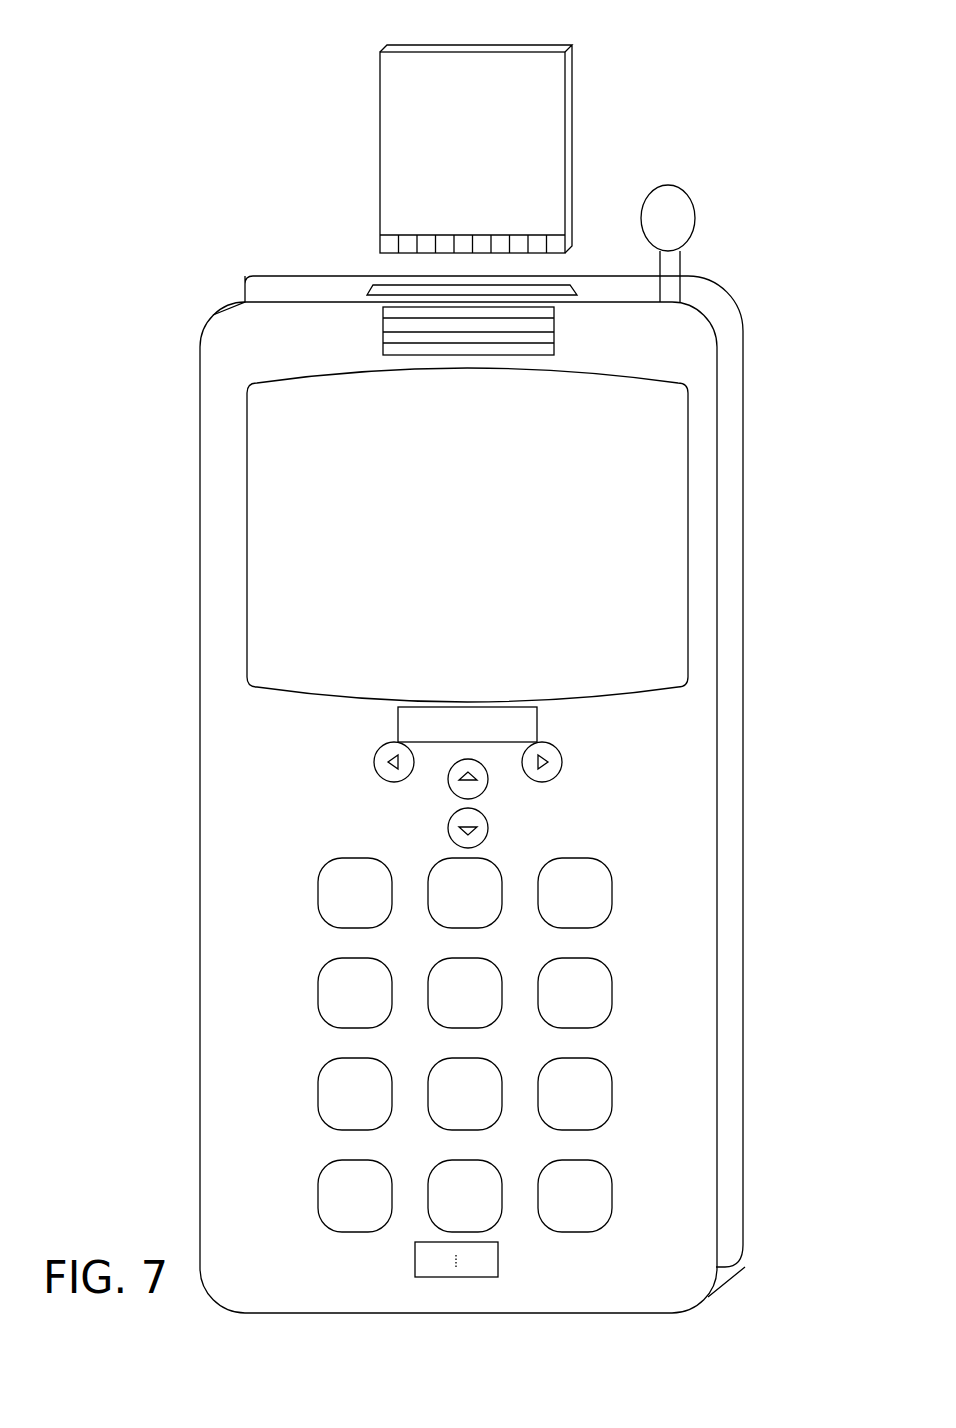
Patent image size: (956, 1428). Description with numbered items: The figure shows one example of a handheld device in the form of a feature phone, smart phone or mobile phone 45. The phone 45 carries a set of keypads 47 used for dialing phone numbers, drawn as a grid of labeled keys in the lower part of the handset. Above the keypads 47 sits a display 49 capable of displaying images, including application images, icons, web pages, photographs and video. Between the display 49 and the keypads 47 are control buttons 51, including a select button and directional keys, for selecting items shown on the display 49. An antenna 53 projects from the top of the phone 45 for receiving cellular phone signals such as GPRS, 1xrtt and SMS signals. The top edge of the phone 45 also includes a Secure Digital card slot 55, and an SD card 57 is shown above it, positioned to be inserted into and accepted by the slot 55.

The mobile phone 45 is at (199, 340).
The keypads 47 is at (633, 892).
The display 49 is at (688, 533).
The control buttons 51 is at (413, 785).
The antenna 53 is at (698, 222).
The Secure Digital (SD) card slot 55 is at (410, 292).
The SD card 57 is at (575, 110).